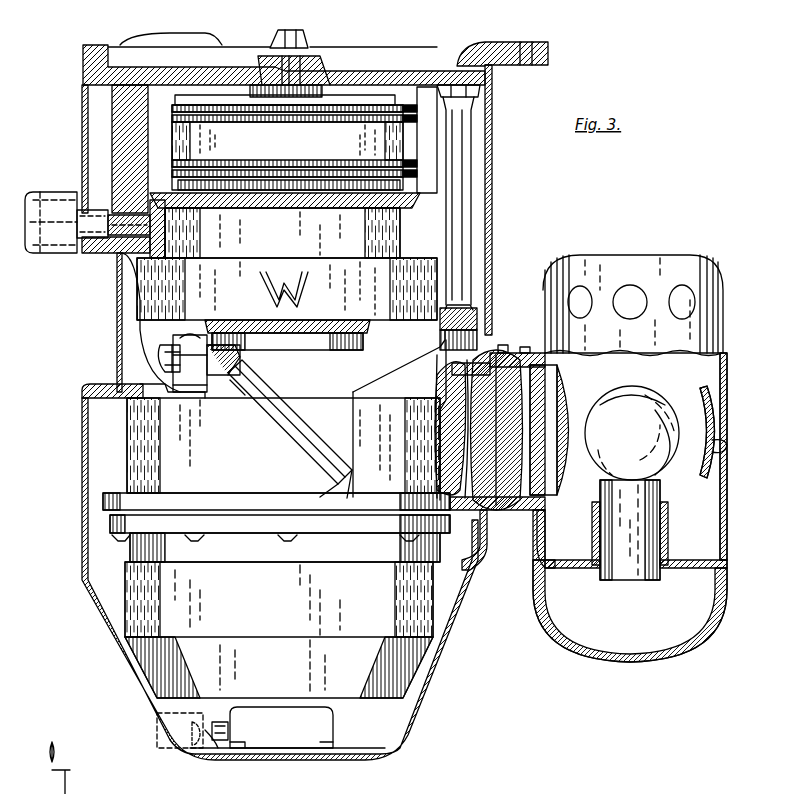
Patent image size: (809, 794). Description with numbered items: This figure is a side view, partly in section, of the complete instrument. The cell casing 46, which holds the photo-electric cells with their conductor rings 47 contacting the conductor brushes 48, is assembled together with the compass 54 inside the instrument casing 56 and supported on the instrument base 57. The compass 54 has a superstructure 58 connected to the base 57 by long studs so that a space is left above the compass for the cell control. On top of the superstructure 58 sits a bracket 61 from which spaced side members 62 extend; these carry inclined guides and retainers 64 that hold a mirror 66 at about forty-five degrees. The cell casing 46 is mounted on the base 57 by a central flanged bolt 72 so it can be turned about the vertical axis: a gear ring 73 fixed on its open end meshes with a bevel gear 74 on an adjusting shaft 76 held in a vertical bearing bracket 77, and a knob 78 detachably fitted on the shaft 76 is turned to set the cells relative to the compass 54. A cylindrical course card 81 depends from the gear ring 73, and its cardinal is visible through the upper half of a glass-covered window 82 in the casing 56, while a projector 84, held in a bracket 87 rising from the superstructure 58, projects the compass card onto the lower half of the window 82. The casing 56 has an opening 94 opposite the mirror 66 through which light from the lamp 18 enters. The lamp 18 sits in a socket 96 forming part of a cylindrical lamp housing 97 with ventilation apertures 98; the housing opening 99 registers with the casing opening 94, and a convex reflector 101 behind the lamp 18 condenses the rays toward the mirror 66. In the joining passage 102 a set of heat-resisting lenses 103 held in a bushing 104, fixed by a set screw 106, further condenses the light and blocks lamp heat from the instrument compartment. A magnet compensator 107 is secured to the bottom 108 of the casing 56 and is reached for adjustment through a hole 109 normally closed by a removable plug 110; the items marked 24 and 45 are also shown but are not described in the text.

The central flanged bolt 72 is at (295, 48).
The conductor brushes 48 is at (410, 100).
The instrument base 57 is at (508, 80).
The instrument casing 56 is at (493, 140).
The vertical bearing bracket 77 is at (112, 118).
The adjusting shaft 76 is at (110, 195).
The knob 78 is at (50, 195).
The insulating casing 46 is at (287, 142).
The conductor rings 47 is at (290, 110).
The bevel gear 74 is at (175, 225).
The gear ring 73 is at (410, 205).
The window 82 is at (117, 272).
The course card 81 is at (145, 295).
The projector 84 is at (163, 352).
The bracket 87 is at (180, 377).
The mirror 66 is at (250, 375).
The bracket 61 is at (370, 377).
The side members 62 is at (343, 432).
The inclined guides and retainers 64 is at (340, 477).
The superstructure 58 is at (135, 470).
The compass 54 is at (112, 598).
The ventilation apertures 98 is at (640, 295).
The set screw 106 is at (522, 347).
The bushing 104 is at (510, 350).
The lenses 103 is at (428, 419).
The joining passage 102 is at (464, 489).
The lamp 18 is at (645, 405).
The lamp housing 97 is at (727, 368).
The convex reflector 101 is at (710, 402).
The opening 99 is at (548, 495).
The socket 96 is at (668, 528).
The opening 94 is at (487, 528).
The film 24 is at (62, 748).
The guide 45 is at (79, 782).
The magnet compensator 107 is at (327, 722).
The bottom 108 is at (312, 758).
The hole 109 is at (190, 752).
The removable plug 110 is at (218, 752).